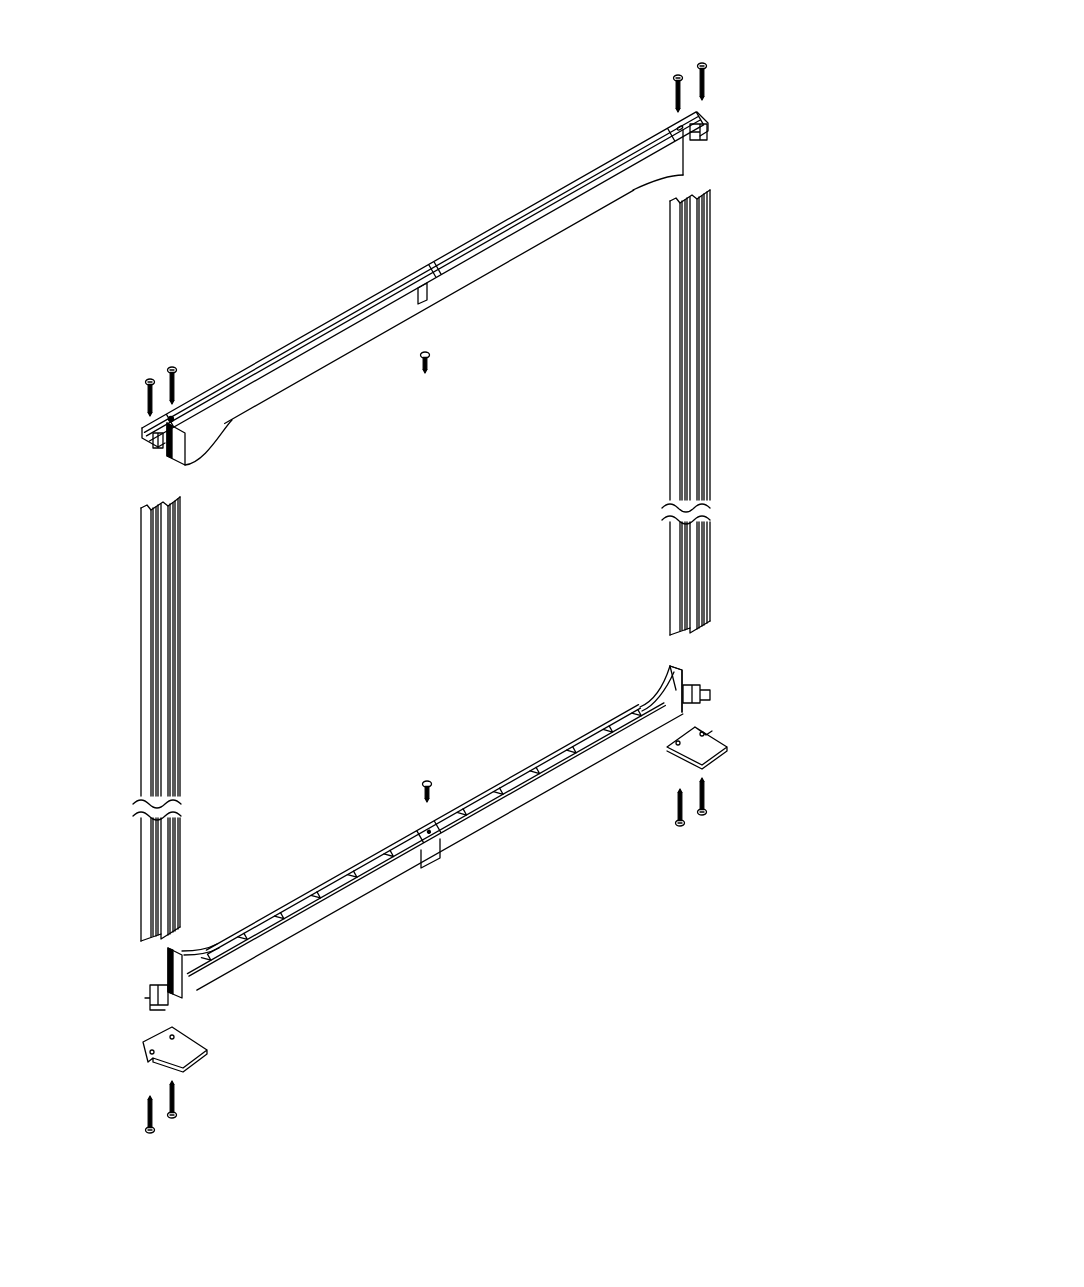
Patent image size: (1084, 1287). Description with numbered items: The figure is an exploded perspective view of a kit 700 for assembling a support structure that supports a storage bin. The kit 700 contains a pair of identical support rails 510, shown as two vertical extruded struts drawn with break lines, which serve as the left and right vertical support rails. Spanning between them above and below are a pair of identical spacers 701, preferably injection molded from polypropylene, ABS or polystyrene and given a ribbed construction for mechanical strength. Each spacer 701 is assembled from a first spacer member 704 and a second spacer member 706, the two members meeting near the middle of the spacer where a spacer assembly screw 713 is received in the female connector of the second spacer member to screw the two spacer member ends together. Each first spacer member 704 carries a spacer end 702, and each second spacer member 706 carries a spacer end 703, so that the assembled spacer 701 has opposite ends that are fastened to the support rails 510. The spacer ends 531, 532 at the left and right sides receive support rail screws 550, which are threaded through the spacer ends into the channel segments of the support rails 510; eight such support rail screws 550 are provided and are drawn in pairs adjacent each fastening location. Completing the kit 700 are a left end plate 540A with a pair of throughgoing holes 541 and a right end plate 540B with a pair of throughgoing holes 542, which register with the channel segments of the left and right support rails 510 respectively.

The kit 700 is at (272, 202).
The spacers 701 is at (425, 212).
The spacer end 702 is at (196, 386).
The spacer end 703 is at (728, 94).
The first spacer member 704 is at (346, 347).
The second spacer member 706 is at (572, 222).
The spacer assembly screw 713 is at (428, 374).
The support rails 510 is at (668, 378).
The spacer end 531 is at (147, 452).
The spacer end 532 is at (711, 139).
The throughgoing holes 541 is at (151, 1050).
The throughgoing holes 542 is at (690, 731).
The left end plate 540A is at (200, 1046).
The right end plate 540B is at (722, 762).
The support rail screws 550 is at (698, 62).